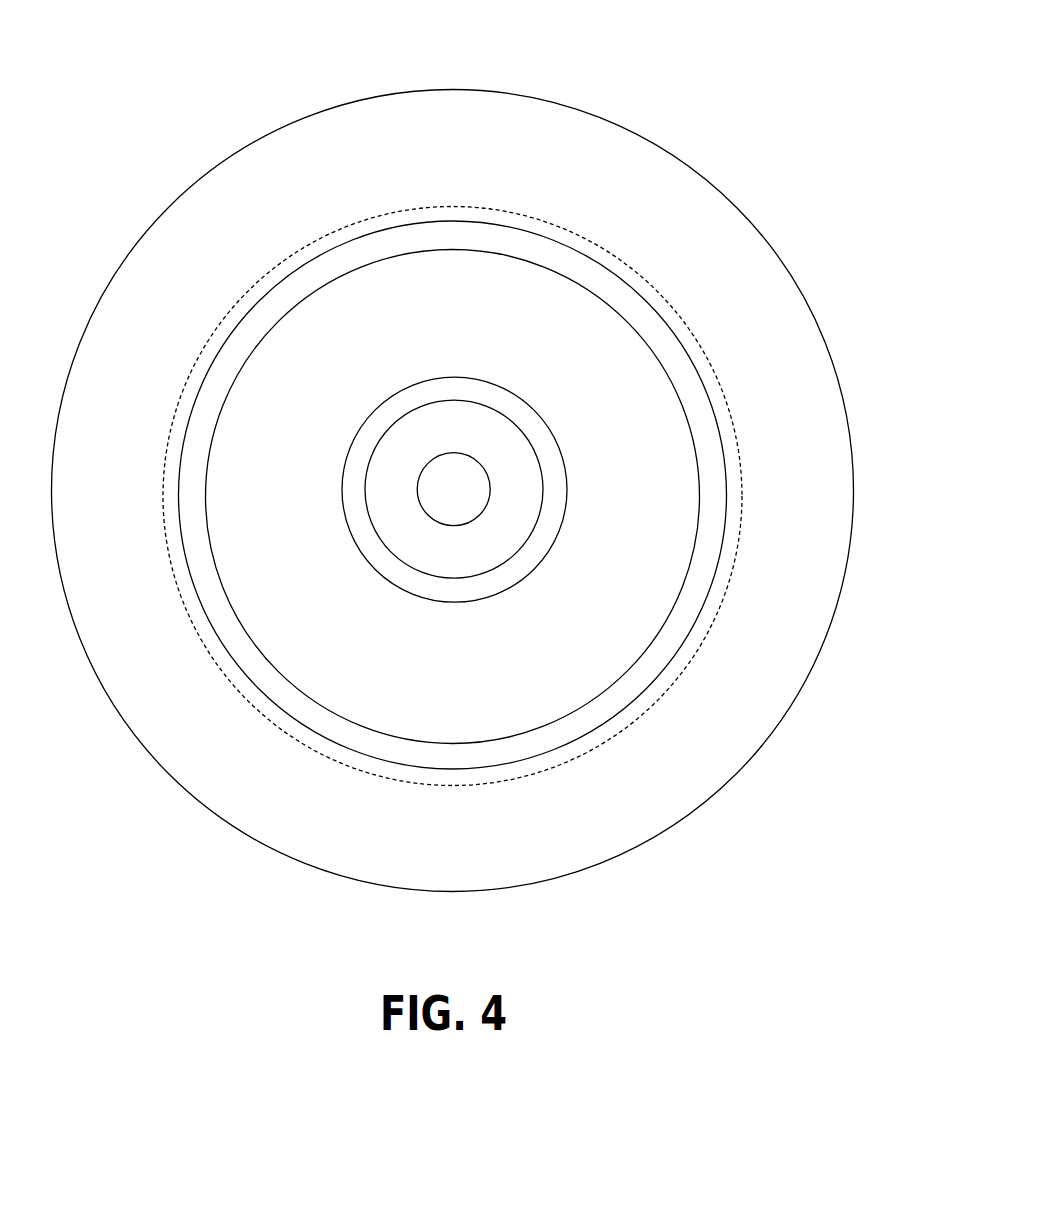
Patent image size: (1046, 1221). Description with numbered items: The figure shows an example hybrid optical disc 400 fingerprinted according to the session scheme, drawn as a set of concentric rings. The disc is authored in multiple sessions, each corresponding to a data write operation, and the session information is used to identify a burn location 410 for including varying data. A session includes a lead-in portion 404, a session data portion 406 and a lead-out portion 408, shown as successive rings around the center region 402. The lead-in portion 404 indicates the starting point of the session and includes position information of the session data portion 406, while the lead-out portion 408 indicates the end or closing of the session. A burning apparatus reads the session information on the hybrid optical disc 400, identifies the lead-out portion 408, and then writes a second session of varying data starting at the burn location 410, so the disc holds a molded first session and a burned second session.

The hybrid optical disc 400 is at (129, 47).
The central bore 402 is at (453, 489).
The lead-in portion 404 is at (529, 425).
The session data portion 406 is at (512, 324).
The lead-out portion 408 is at (495, 240).
The burn location 410 is at (441, 212).